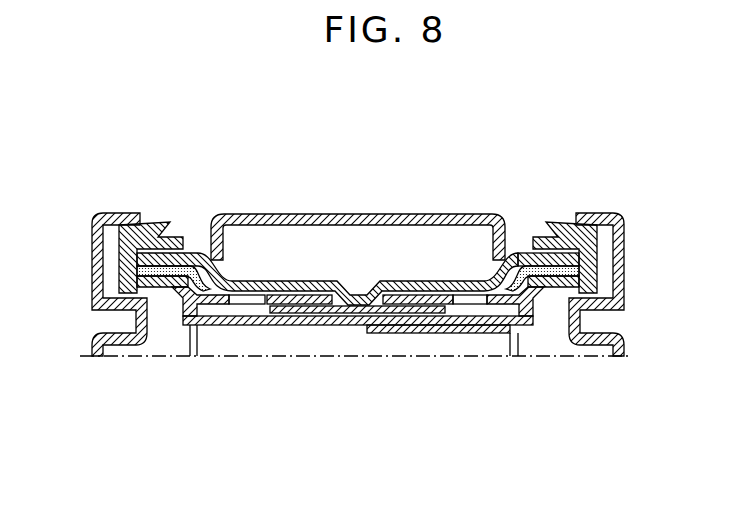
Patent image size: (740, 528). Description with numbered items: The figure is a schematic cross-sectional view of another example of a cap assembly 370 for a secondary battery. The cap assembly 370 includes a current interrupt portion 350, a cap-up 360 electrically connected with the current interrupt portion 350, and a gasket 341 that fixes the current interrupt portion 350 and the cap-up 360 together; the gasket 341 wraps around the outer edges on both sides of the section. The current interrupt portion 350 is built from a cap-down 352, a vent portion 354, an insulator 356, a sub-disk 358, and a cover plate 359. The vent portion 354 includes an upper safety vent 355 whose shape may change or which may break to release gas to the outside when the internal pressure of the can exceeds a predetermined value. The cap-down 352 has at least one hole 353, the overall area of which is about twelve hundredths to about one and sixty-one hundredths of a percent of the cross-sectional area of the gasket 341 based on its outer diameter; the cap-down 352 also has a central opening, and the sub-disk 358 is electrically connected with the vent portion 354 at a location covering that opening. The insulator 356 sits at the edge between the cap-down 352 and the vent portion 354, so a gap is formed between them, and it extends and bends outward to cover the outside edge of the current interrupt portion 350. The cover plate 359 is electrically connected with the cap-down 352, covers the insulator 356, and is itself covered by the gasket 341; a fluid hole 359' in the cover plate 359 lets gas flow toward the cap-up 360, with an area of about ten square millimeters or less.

The gasket 341 is at (116, 265).
The current interrupt portion 350 is at (348, 274).
The cap-down 352 is at (584, 294).
The hole 353 is at (247, 305).
The vent portion 354 is at (585, 263).
The upper safety vent 355 is at (467, 282).
The insulator 356 is at (583, 274).
The sub-disk 358 is at (391, 313).
The cover plate 359 is at (358, 361).
The fluid hole 359' is at (197, 365).
The cap-up 360 is at (361, 222).
The cap assembly 370 is at (547, 180).